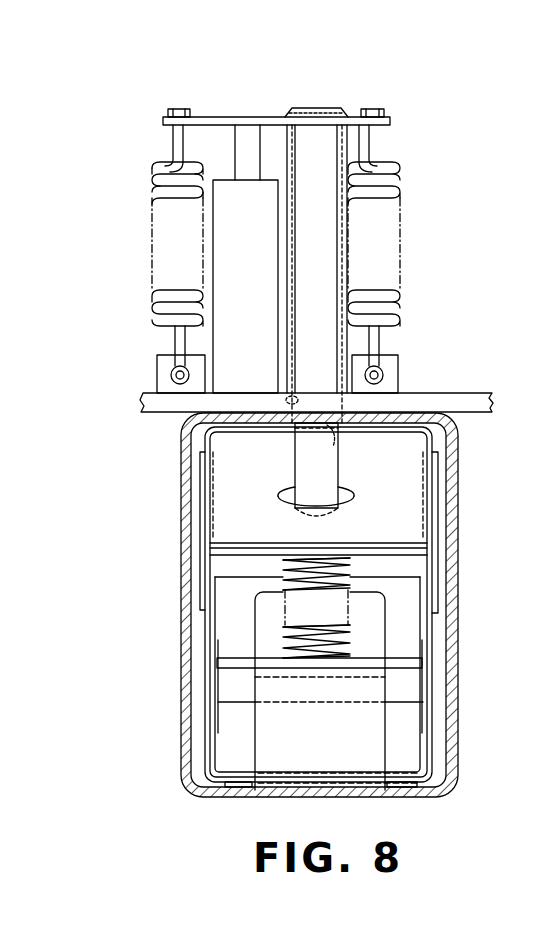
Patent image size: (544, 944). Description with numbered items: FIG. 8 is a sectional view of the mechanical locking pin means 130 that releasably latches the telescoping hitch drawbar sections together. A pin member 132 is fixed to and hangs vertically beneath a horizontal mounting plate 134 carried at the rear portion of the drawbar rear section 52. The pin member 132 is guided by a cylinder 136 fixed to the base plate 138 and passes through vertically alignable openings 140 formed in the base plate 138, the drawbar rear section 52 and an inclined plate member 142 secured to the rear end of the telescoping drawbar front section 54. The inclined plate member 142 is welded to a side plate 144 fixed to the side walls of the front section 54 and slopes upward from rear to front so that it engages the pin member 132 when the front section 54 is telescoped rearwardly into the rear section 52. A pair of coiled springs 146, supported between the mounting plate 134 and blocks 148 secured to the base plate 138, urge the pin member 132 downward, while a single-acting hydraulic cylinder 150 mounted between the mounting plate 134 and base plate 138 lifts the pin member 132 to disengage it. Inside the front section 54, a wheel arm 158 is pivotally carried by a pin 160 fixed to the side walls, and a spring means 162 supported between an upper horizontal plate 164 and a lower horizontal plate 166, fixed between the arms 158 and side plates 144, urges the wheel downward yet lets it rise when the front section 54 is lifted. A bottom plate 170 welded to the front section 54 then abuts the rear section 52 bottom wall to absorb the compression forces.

The locking pin means 130 is at (406, 122).
The mounting plate 134 is at (222, 118).
The cylinder 136 is at (284, 191).
The single-acting hydraulic cylinder 150 is at (262, 262).
The pin member 132 is at (338, 472).
The openings 140 is at (288, 401).
The coiled springs 146 is at (152, 185).
The blocks 148 is at (157, 362).
The base plate 138 is at (452, 396).
The drawbar rear section 52 is at (456, 524).
The telescoping drawbar front section 54 is at (215, 447).
The inclined plate member 142 is at (405, 526).
The side plate 144 is at (200, 513).
The upper horizontal plate 164 is at (266, 556).
The spring means 162 is at (367, 629).
The lower horizontal plate 166 is at (265, 667).
The arm 158 is at (242, 642).
The pin 160 is at (245, 695).
The bottom plate 170 is at (398, 789).